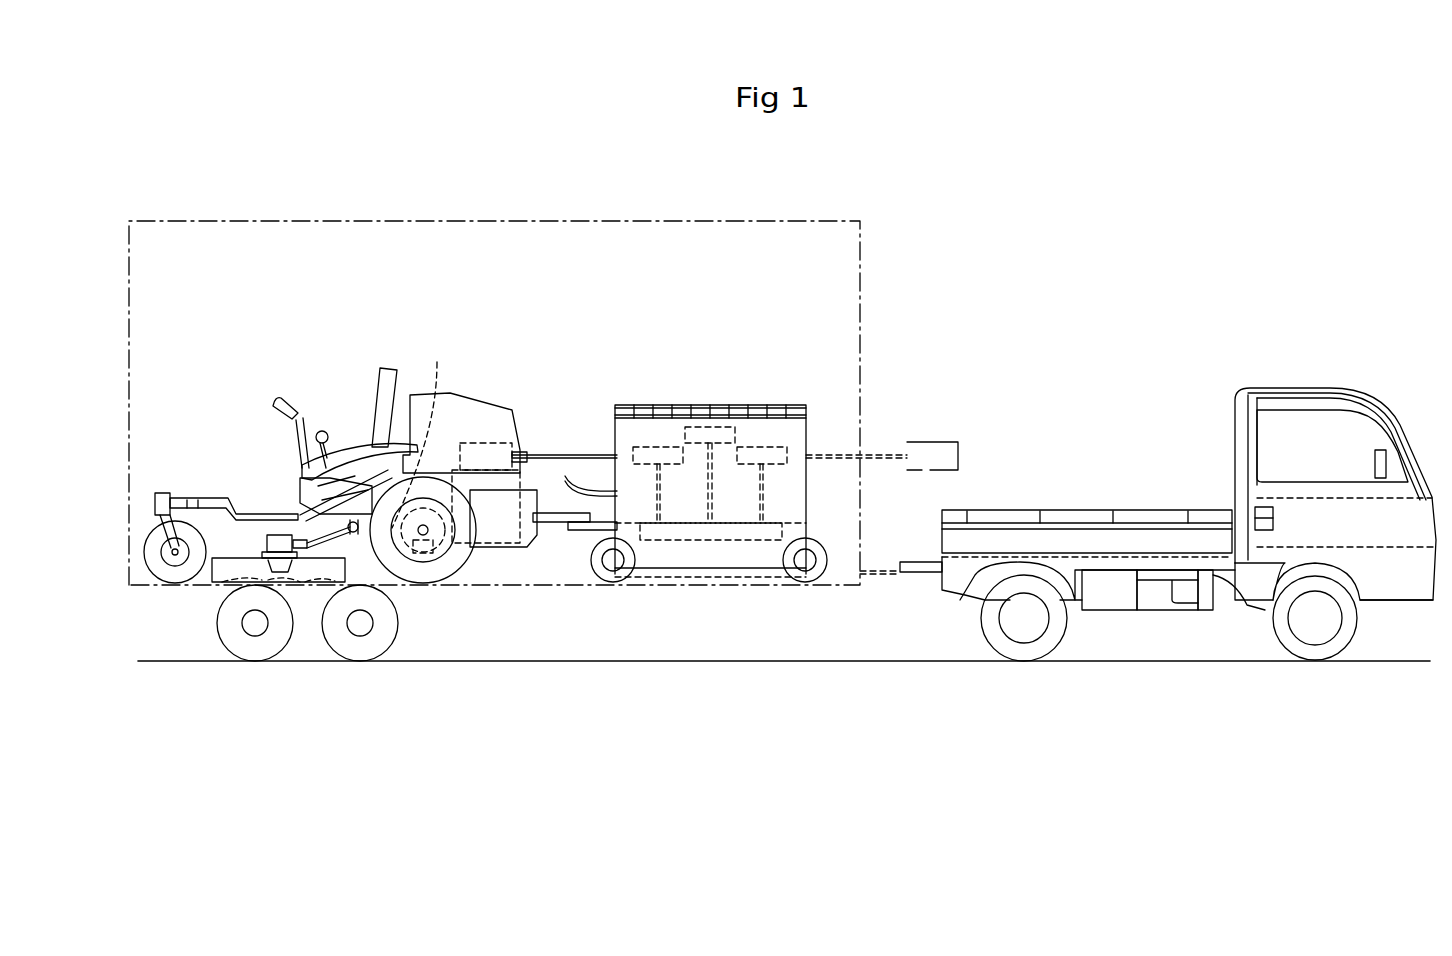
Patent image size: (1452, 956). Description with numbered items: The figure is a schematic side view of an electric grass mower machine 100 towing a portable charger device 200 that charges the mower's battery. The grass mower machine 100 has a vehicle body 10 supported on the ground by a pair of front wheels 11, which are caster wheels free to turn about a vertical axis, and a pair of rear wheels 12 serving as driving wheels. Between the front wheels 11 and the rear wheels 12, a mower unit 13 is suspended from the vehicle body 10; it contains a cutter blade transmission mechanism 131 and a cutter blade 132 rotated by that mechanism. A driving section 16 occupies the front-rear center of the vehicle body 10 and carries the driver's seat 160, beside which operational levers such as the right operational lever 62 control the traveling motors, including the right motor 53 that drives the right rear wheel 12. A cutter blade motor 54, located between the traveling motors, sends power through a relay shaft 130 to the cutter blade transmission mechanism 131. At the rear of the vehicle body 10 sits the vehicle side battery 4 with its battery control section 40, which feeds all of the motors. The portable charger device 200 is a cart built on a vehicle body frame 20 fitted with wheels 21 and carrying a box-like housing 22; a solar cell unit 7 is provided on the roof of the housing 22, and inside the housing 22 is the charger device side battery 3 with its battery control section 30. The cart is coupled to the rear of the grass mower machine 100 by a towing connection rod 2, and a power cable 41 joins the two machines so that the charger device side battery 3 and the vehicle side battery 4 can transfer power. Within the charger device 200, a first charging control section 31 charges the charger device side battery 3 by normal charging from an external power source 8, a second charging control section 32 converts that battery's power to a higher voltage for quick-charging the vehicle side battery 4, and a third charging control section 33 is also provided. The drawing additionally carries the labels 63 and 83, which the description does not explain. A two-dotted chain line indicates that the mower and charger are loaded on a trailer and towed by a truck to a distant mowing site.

The electric grass mower machine 100 is at (368, 304).
The portable charger device 200 is at (710, 374).
The driving section 16 is at (239, 376).
The vehicle body 10 is at (205, 500).
The front wheels 11 is at (165, 572).
The rear wheels 12 is at (452, 567).
The mower unit 13 is at (300, 578).
The relay shaft 130 is at (300, 484).
The cutter blade transmission mechanism 131 is at (266, 547).
The cutter blade 132 is at (222, 588).
The driver's seat 160 is at (380, 390).
The right motor 53 is at (424, 433).
The right operational lever 62 is at (272, 412).
The operation lever 63 is at (329, 434).
The battery control section 40 is at (493, 445).
The vehicle side battery 4 is at (495, 545).
The cutter blade motor 54 is at (414, 560).
The power cable 41 is at (547, 453).
The towing connection rod 2 is at (563, 512).
The vehicle body frame 20 is at (716, 575).
The wheels 21 is at (607, 582).
The housing 22 is at (614, 436).
The solar cell unit 7 is at (755, 404).
The third charging control section 33 is at (684, 436).
The first charging control section 31 is at (777, 447).
The second charging control section 32 is at (655, 465).
The battery control section 30 is at (696, 540).
The charger device side battery 3 is at (782, 523).
The power cable 83 is at (890, 452).
The external power source 8 is at (932, 442).